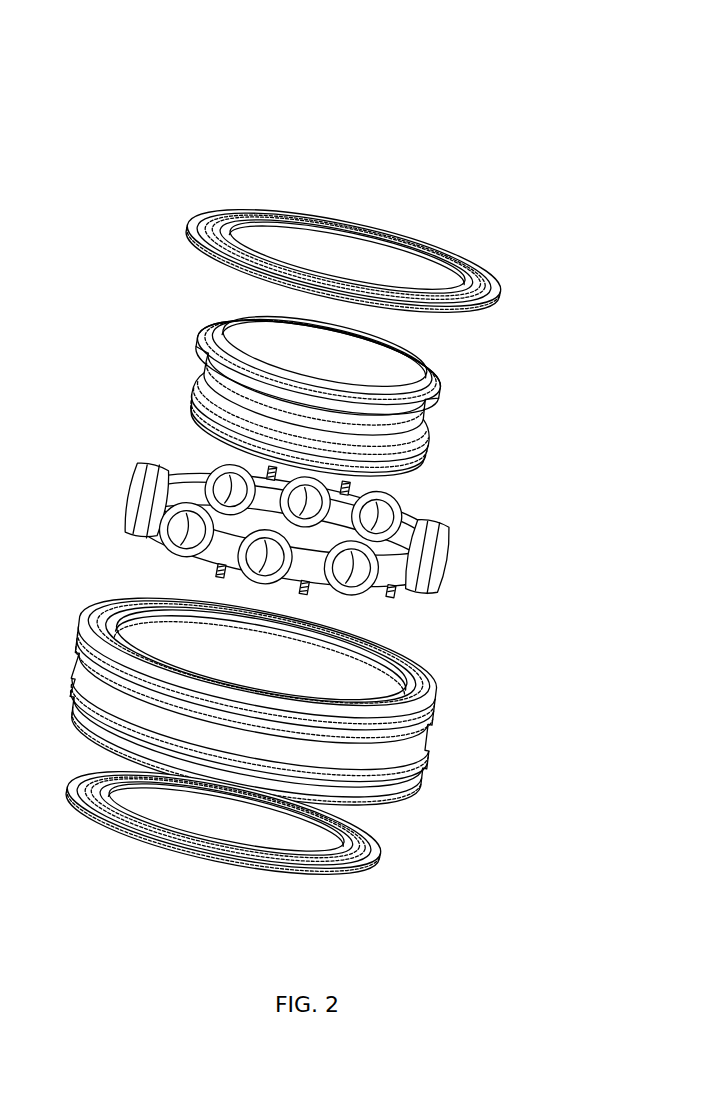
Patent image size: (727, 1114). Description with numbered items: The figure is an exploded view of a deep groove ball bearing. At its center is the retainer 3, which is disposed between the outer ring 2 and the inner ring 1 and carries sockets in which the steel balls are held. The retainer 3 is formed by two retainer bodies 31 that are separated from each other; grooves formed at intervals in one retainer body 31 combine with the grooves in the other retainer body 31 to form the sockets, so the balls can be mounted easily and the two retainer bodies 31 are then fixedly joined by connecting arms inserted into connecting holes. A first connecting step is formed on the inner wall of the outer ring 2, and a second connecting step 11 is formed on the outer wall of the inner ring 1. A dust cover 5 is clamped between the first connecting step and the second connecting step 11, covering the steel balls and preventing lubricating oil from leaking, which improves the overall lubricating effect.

The inner ring 1 is at (435, 285).
The second connecting step 11 is at (443, 249).
The outer ring 2 is at (337, 655).
The retainer 3 is at (392, 450).
The retainer body 31 is at (410, 451).
The dust cover 5 is at (356, 452).